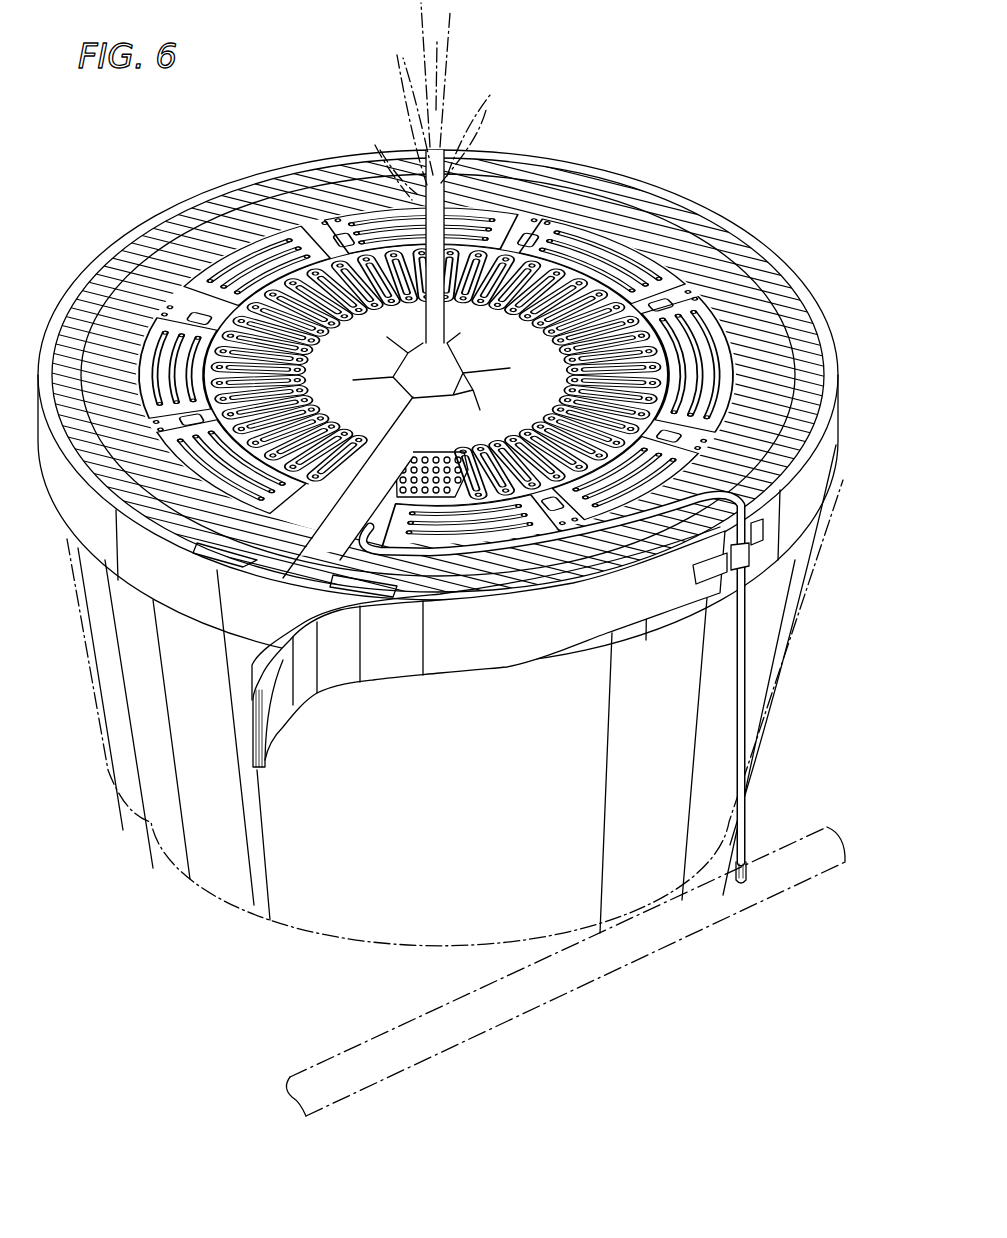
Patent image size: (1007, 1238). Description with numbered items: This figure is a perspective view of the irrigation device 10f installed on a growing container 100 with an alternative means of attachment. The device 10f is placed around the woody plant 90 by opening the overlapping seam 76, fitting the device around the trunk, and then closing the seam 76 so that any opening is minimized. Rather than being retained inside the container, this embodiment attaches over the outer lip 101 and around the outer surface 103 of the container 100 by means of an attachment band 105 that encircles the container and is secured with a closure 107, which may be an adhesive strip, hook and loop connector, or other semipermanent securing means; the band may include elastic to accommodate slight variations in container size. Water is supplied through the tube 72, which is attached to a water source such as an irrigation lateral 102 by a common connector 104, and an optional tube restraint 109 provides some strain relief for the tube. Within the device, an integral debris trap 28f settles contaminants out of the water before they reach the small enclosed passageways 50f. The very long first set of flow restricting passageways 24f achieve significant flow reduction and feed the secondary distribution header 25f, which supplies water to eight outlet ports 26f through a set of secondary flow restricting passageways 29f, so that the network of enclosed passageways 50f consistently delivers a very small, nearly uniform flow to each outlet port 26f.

The device 10f is at (717, 263).
The first set of flow restricting passageways 24f is at (280, 287).
The secondary distribution header 25f is at (200, 360).
The outlet ports 26f is at (463, 200).
The integral debris trap 28f is at (437, 453).
The secondary flow restricting passageways 29f is at (618, 243).
The enclosed passageways 50f is at (727, 337).
The tube 72 is at (742, 787).
The overlapping seam 76 is at (307, 548).
The woody plant 90 is at (452, 56).
The growing container 100 is at (248, 907).
The outer lip 101 is at (148, 238).
The irrigation lateral 102 is at (605, 963).
The outer surface 103 is at (350, 937).
The common connector 104 is at (748, 868).
The attachment band 105 is at (123, 569).
The closure 107 is at (280, 707).
The tube restraint 109 is at (750, 560).